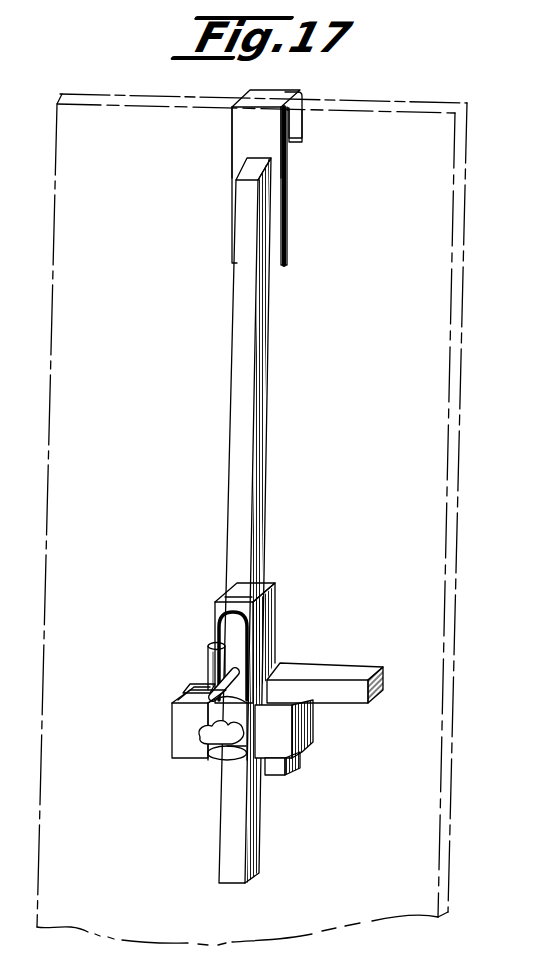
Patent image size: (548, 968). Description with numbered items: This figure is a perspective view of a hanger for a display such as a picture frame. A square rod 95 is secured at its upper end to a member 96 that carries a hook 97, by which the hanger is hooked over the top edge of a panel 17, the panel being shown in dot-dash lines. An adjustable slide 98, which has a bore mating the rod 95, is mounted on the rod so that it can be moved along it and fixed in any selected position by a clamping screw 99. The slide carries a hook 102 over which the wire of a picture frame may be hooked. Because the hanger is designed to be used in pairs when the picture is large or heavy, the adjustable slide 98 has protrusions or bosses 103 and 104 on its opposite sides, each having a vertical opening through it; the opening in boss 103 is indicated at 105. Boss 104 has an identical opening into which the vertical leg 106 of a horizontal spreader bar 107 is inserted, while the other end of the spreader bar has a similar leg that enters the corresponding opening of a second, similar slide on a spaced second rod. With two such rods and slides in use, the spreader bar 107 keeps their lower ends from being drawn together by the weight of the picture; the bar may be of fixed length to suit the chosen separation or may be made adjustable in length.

The panel 17 is at (427, 222).
The square rod 95 is at (250, 373).
The member 96 is at (243, 136).
The hook 97 is at (300, 123).
The adjustable slide 98 is at (281, 605).
The clamping screw 99 is at (206, 752).
The hook 102 is at (208, 652).
The boss 103 is at (172, 724).
The boss 104 is at (312, 726).
The opening 105 is at (193, 685).
The vertical leg 106 is at (277, 772).
The spreader bar 107 is at (362, 648).